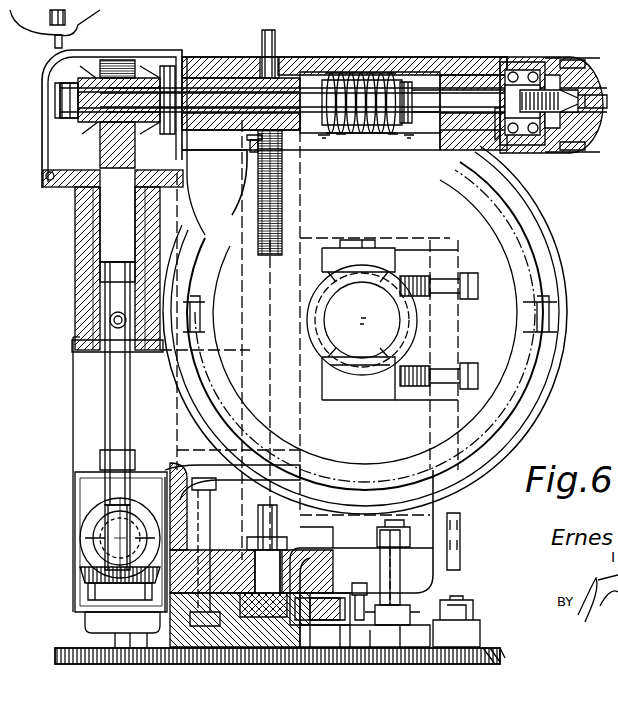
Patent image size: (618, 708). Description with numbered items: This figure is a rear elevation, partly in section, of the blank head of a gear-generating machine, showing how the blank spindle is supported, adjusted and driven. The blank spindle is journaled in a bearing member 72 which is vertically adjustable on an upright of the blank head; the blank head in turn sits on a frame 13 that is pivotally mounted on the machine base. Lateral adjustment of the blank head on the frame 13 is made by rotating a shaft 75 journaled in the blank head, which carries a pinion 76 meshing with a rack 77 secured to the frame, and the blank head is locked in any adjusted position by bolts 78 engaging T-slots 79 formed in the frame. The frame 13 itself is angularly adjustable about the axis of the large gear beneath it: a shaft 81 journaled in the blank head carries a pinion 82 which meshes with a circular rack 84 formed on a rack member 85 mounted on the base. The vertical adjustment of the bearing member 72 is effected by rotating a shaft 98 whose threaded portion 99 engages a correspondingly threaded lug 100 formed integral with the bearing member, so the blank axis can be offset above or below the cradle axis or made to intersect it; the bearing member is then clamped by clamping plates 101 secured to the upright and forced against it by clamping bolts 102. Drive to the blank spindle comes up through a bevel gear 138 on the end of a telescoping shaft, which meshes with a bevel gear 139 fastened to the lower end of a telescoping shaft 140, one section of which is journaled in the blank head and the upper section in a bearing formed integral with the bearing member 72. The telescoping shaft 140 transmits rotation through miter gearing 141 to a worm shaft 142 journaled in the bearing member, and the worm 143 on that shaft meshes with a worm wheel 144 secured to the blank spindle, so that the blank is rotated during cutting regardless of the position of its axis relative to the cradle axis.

The frame 13 is at (470, 632).
The bearing member 72 is at (342, 218).
The shaft 75 is at (262, 530).
The pinion 76 is at (302, 562).
The rack 77 is at (310, 606).
The bolts 78 is at (430, 589).
The T-slots 79 is at (408, 614).
The shaft 81 is at (362, 598).
The pinion 82 is at (392, 650).
The circular rack 84 is at (480, 655).
The rack member 85 is at (107, 24).
The shaft 98 is at (275, 35).
The threaded portion 99 is at (280, 218).
The lug 100 is at (256, 152).
The clamping plates 101 is at (452, 345).
The clamping bolts 102 is at (466, 290).
The bevel gear 138 is at (78, 538).
The bevel gear 139 is at (80, 578).
The telescoping shaft 140 is at (116, 386).
The miter gearing 141 is at (162, 77).
The worm shaft 142 is at (312, 96).
The worm 143 is at (388, 82).
The worm wheel 144 is at (400, 138).